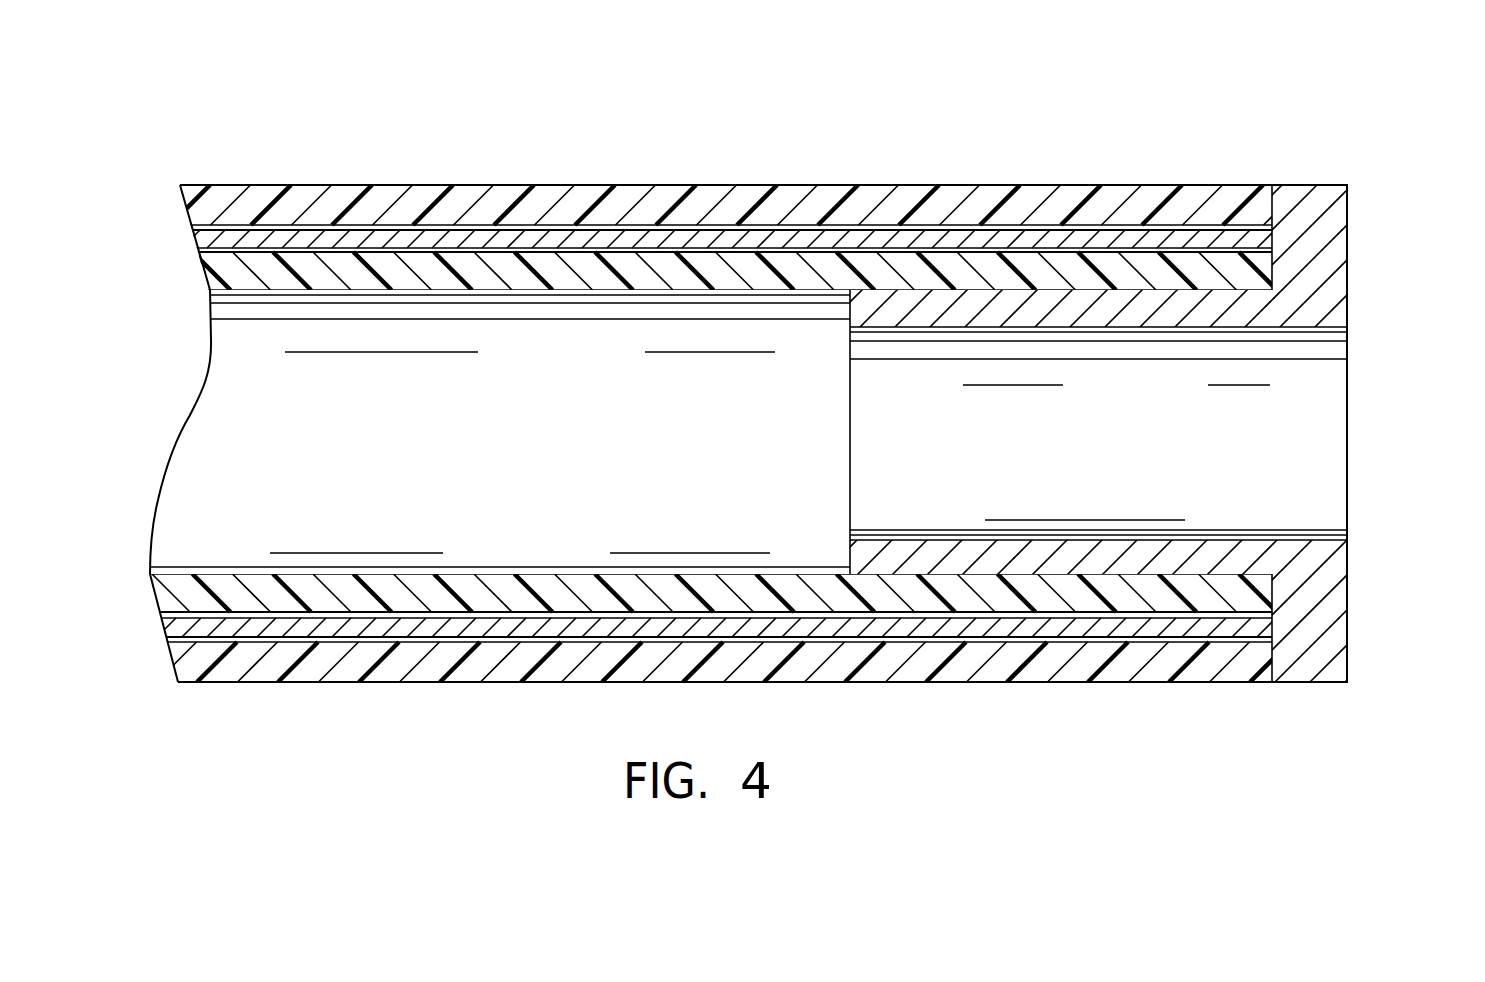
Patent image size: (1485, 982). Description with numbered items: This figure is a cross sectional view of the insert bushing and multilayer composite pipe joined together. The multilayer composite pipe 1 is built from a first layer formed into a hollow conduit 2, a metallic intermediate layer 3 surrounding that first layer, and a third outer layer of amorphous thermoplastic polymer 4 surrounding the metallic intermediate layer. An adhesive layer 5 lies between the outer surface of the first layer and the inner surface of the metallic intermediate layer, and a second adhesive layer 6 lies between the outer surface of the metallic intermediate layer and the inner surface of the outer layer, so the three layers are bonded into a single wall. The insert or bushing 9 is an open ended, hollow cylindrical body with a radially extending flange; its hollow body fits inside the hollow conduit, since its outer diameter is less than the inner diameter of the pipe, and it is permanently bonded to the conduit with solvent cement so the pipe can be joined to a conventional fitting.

The multilayer composite pipe 1 is at (1043, 182).
The hollow conduit 2 is at (387, 263).
The metallic intermediate layer 3 is at (553, 237).
The amorphous thermoplastic polymer layer 4 is at (663, 200).
The adhesive layer 5 is at (850, 252).
The second adhesive layer 6 is at (933, 228).
The insert or bushing 9 is at (1350, 235).